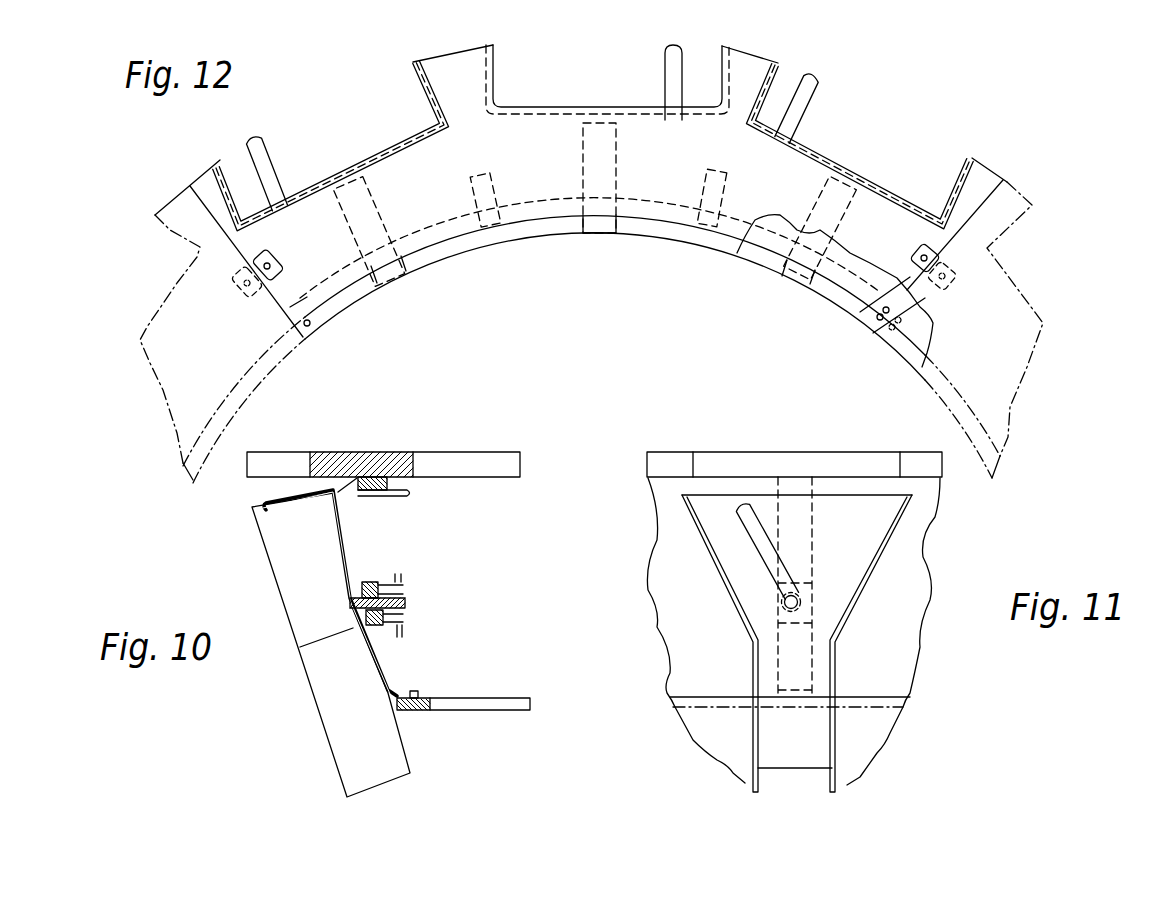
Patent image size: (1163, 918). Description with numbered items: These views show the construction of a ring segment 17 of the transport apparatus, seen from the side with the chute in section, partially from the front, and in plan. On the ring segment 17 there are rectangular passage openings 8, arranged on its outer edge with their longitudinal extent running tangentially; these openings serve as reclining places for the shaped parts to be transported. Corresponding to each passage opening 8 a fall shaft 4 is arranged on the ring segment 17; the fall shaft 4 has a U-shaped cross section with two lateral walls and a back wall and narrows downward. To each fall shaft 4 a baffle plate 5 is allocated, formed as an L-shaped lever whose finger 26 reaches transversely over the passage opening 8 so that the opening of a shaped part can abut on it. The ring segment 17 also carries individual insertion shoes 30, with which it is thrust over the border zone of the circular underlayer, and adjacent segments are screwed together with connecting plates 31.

In FIG. 10, the fall shaft 4 is at (288, 555).
In FIG. 11, the fall shaft 4 is at (753, 587).
In FIG. 11, the baffle plate 5 is at (760, 547).
In FIG. 12, the passage opening 8 is at (311, 134).
In FIG. 10, the passage opening 8 is at (263, 467).
In FIG. 10, the ring segment 17 is at (500, 465).
In FIG. 11, the ring segment 17 is at (665, 462).
In FIG. 12, the finger 26 is at (248, 153).
In FIG. 11, the finger 26 is at (735, 512).
In FIG. 12, the insertion shoe 30 is at (396, 268).
In FIG. 10, the insertion shoe 30 is at (397, 493).
In FIG. 12, the connecting plate 31 is at (270, 274).